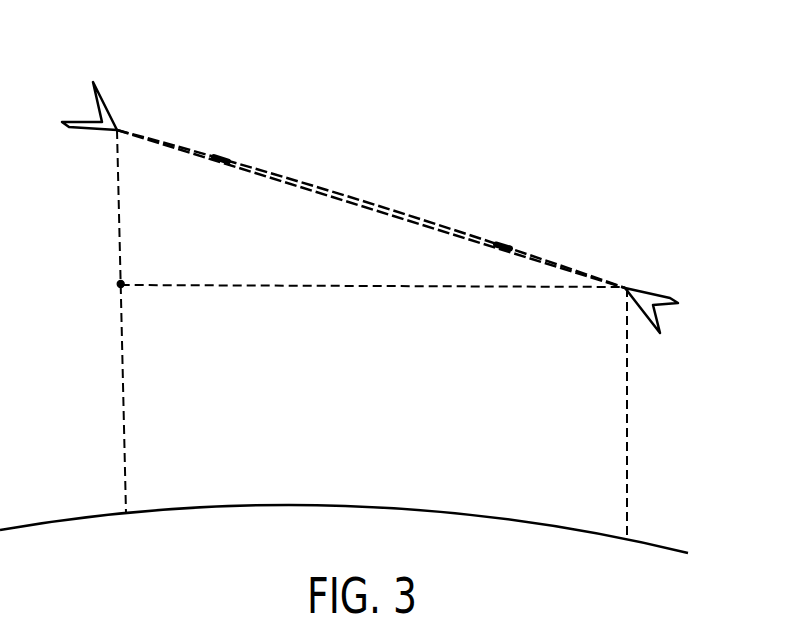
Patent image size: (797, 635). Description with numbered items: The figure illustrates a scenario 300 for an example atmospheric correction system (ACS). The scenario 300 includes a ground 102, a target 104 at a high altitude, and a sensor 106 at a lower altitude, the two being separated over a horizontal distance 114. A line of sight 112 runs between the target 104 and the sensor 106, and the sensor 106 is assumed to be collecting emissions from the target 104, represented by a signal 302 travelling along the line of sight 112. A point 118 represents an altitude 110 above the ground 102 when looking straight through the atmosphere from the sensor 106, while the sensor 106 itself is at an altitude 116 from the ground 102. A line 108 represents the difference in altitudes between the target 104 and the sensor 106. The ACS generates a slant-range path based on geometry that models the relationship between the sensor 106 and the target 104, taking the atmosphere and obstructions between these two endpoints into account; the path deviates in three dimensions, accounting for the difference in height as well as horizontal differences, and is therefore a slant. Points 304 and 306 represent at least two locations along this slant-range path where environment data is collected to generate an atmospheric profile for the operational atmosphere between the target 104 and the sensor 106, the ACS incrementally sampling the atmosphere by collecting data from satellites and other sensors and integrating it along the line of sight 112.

The scenario 300 is at (642, 109).
The ground 102 is at (35, 528).
The target 104 is at (80, 121).
The sensor 106 is at (671, 307).
The line 108 is at (117, 193).
The altitude 110 is at (118, 350).
The line of sight 112 is at (278, 185).
The horizontal distance 114 is at (330, 282).
The altitude 116 is at (628, 465).
The point 118 is at (118, 282).
The signal 302 is at (359, 198).
The point 304 is at (222, 156).
The point 306 is at (504, 244).